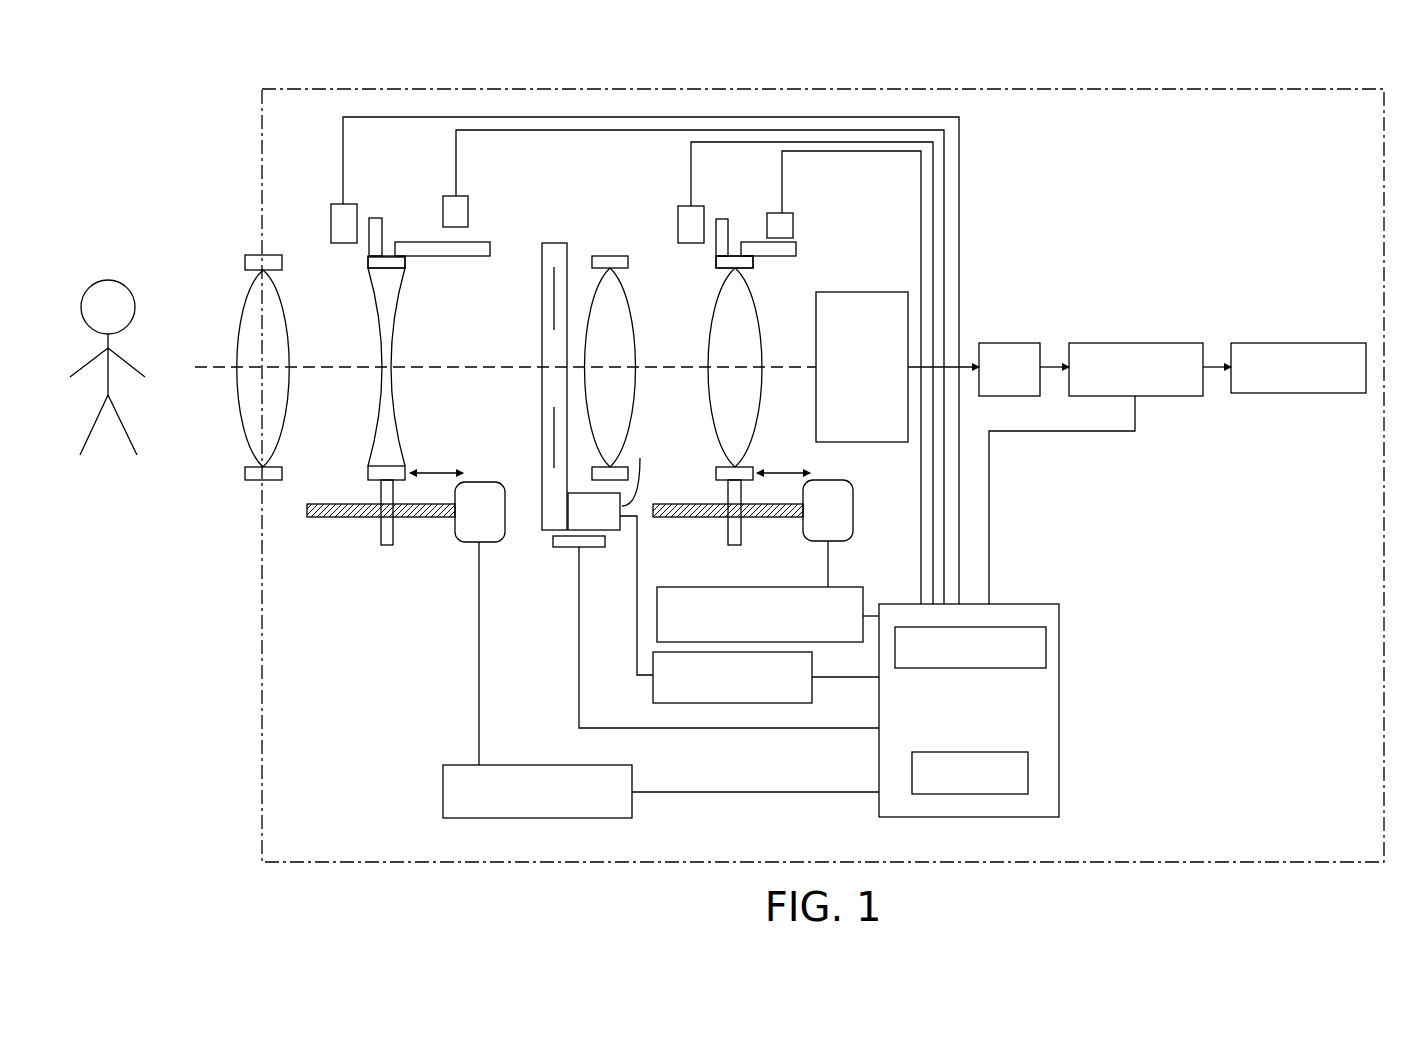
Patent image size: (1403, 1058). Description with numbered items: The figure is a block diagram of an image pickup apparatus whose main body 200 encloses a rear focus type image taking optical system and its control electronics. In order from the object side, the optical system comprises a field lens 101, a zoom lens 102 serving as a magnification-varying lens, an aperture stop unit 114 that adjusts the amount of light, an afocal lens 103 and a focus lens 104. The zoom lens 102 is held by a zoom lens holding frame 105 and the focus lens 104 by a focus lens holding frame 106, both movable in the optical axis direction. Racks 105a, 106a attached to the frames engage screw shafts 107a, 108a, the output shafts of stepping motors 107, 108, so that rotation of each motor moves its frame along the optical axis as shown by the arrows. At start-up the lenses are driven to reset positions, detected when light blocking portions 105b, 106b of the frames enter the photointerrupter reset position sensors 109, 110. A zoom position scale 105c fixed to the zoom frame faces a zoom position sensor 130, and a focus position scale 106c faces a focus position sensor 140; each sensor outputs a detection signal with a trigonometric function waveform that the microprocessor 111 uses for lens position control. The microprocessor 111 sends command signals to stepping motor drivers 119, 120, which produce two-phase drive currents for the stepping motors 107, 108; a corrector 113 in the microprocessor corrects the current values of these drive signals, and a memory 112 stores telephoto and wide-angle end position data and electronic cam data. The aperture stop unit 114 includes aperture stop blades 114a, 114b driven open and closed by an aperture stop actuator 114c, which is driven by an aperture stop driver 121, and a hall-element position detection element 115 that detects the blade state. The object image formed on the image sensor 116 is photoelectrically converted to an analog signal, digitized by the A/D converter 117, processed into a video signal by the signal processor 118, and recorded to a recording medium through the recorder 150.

The field lens 101 is at (243, 307).
The zoom lens 102 is at (398, 355).
The afocal lens 103 is at (634, 330).
The focus lens 104 is at (760, 352).
The zoom lens holding frame 105 is at (368, 266).
The rack 105a is at (380, 535).
The light blocking portion 105b is at (383, 228).
The zoom position scale 105c is at (450, 256).
The focus lens holding frame 106 is at (716, 266).
The rack 106a is at (728, 535).
The light blocking portion 106b is at (722, 226).
The focus position scale 106c is at (778, 258).
The stepping motor 107 is at (462, 545).
The screw shaft 107a is at (308, 512).
The stepping motor 108 is at (858, 525).
The screw shaft 108a is at (690, 504).
The reset position sensor 109 is at (333, 210).
The reset position sensor 110 is at (678, 216).
The microprocessor 111 is at (1003, 604).
The memory 112 is at (1028, 776).
The corrector 113 is at (1046, 645).
The aperture stop unit 114 is at (560, 241).
The aperture stop blade 114a is at (550, 305).
The aperture stop blade 114b is at (548, 420).
The aperture stop actuator 114c is at (649, 471).
The position detection element 115 is at (560, 549).
The image sensor 116 is at (868, 292).
The A/D converter 117 is at (1010, 343).
The signal processor 118 is at (1100, 343).
The stepping motor driver 119 is at (450, 765).
The stepping motor driver 120 is at (756, 586).
The aperture stop driver 121 is at (653, 690).
The zoom position sensor 130 is at (470, 210).
The focus position sensor 140 is at (800, 226).
The recorder 150 is at (1264, 343).
The main body 200 is at (475, 866).